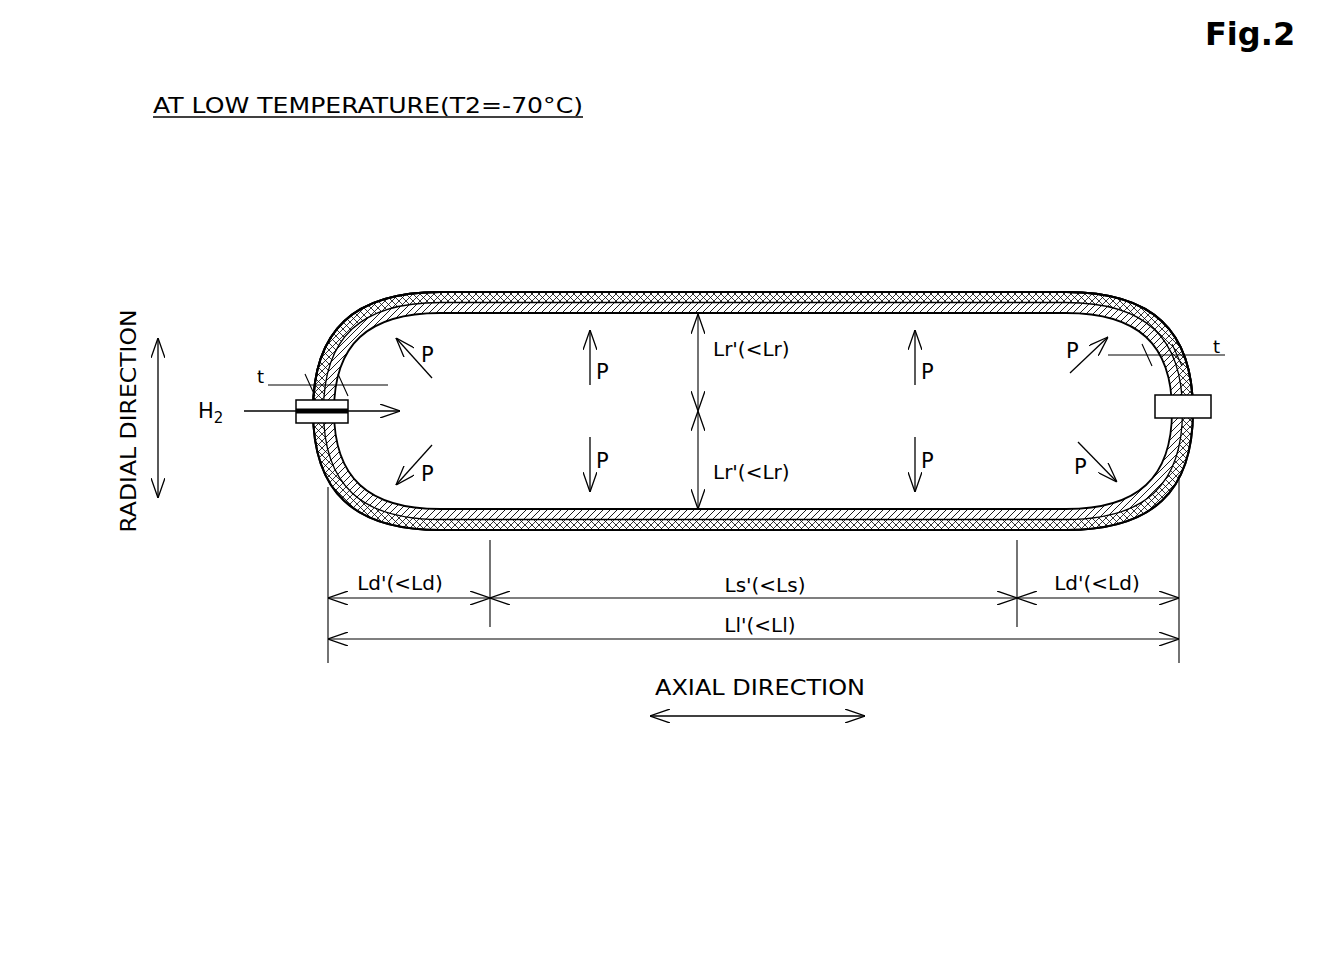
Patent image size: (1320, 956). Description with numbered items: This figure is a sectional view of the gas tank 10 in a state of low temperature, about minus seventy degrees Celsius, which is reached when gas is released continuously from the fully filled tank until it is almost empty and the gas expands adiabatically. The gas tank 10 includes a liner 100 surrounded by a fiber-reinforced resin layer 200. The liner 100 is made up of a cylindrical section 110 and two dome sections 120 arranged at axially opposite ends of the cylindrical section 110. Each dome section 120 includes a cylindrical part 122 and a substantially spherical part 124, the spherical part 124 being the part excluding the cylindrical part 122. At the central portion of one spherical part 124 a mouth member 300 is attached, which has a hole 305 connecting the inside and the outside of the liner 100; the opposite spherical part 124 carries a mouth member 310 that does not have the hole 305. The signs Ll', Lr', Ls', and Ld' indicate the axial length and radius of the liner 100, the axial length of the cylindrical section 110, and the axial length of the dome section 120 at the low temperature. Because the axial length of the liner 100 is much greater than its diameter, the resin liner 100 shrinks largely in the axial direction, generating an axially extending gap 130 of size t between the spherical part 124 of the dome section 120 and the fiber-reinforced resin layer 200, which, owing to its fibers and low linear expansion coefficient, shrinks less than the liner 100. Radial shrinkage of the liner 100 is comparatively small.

The gas tank 10 is at (297, 234).
The liner 100 is at (1160, 216).
The cylindrical section 110 is at (766, 318).
The dome section 120 is at (393, 296).
The cylindrical part 122 is at (453, 296).
The substantially spherical part 124 is at (358, 316).
The gap 130 is at (320, 365).
The fiber-reinforced resin layer 200 is at (735, 532).
The mouth member 300 is at (300, 424).
The hole 305 is at (300, 404).
The mouth member 310 is at (1200, 396).